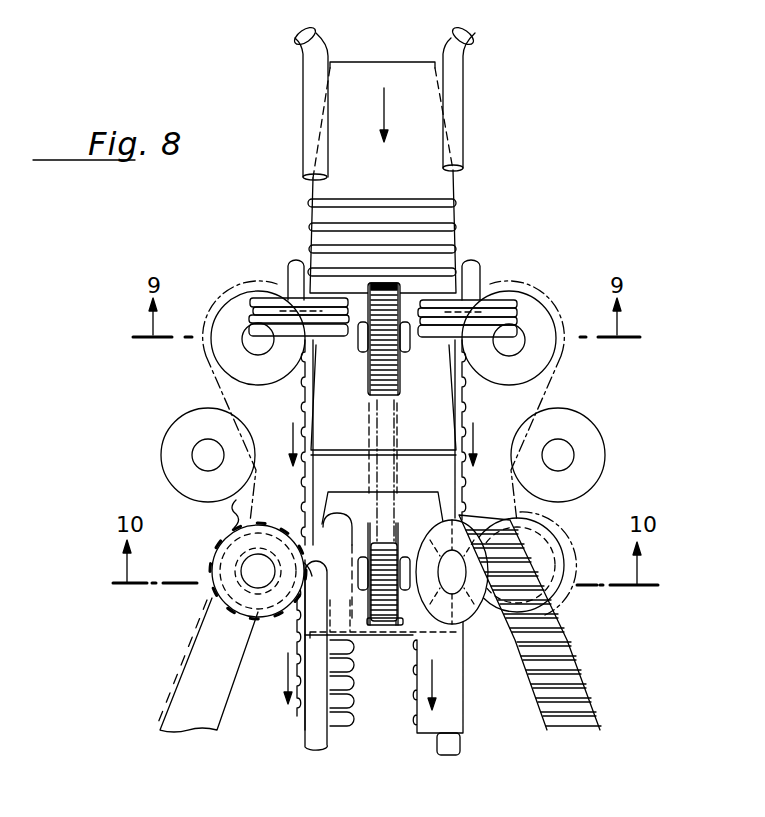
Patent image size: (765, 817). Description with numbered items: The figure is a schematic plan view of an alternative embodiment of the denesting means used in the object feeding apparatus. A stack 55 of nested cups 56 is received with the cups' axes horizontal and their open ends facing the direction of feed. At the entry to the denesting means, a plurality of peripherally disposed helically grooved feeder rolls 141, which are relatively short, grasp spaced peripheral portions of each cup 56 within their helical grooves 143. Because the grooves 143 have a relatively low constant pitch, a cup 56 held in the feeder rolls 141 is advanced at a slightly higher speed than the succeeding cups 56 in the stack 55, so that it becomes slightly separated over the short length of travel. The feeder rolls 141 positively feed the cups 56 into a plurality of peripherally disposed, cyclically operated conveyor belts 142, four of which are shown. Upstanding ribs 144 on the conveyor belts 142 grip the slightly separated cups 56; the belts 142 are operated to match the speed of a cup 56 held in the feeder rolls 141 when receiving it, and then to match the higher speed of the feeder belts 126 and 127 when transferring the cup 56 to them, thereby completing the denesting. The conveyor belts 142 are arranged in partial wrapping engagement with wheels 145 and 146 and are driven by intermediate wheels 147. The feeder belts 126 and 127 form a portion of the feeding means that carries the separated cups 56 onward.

The stack 55 is at (462, 202).
The cups 56 is at (332, 422).
The helically grooved feeder rolls 141 is at (262, 303).
The conveyor belts 142 is at (230, 383).
The helical grooves 143 is at (300, 298).
The upstanding ribs 144 is at (462, 465).
The wheels 145 is at (235, 360).
The wheels 146 is at (240, 545).
The intermediate wheels 147 is at (175, 452).
The feeder belt 126 is at (570, 650).
The feeder belt 127 is at (200, 632).